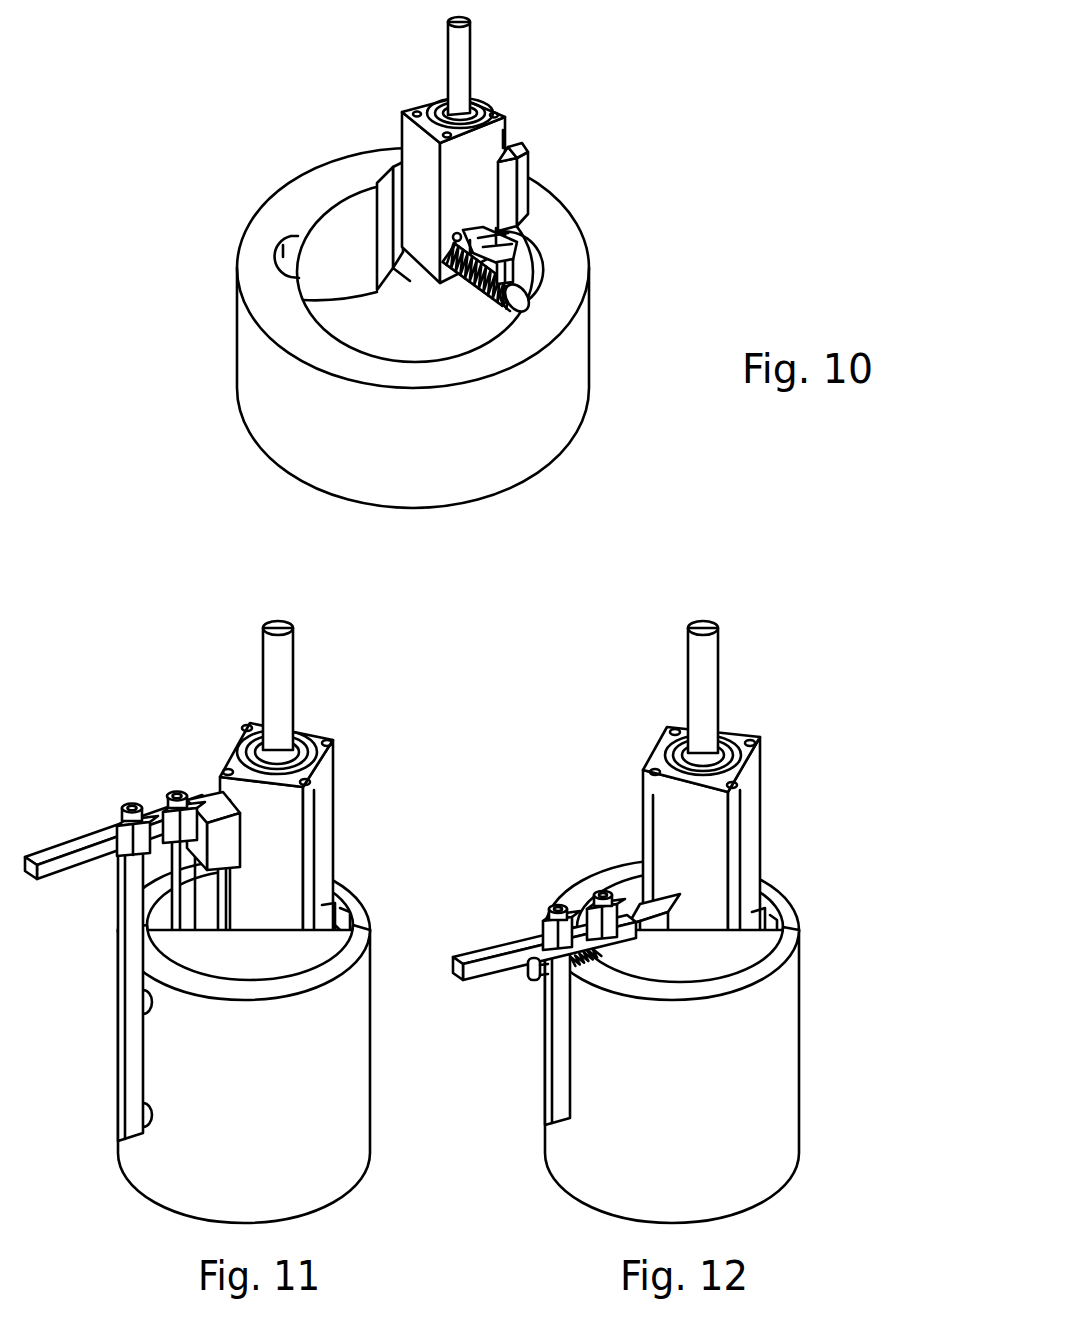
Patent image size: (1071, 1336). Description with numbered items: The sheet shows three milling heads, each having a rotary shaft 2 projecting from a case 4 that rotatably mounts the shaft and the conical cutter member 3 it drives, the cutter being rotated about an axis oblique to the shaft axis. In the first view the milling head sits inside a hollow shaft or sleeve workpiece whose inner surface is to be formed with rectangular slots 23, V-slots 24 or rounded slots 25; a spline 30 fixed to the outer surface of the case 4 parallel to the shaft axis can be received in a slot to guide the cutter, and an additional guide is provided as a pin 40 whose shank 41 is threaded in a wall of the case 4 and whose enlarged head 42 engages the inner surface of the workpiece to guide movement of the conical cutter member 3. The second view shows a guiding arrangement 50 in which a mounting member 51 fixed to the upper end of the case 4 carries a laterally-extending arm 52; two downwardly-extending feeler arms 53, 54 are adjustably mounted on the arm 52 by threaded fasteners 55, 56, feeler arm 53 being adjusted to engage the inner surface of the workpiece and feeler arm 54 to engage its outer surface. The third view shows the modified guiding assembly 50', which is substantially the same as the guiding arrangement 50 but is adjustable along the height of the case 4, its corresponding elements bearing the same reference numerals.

In FIG. 10, the rotary shaft 2 is at (465, 51).
In FIG. 11, the rotary shaft 2 is at (284, 662).
In FIG. 12, the rotary shaft 2 is at (712, 663).
In FIG. 10, the conical cutter member 3 is at (520, 243).
In FIG. 10, the case 4 is at (502, 134).
In FIG. 11, the case 4 is at (338, 816).
In FIG. 12, the case 4 is at (764, 772).
In FIG. 10, the rectangular slots 23 is at (515, 272).
In FIG. 10, the V-slots 24 is at (388, 147).
In FIG. 10, the rounded slots 25 is at (280, 253).
In FIG. 10, the spline 30 is at (522, 183).
In FIG. 10, the pin 40 is at (490, 300).
In FIG. 10, the shank 41 is at (452, 276).
In FIG. 10, the enlarged head 42 is at (521, 302).
In FIG. 11, the guiding arrangement 50 is at (150, 621).
In FIG. 12, the guiding assembly 50' is at (547, 645).
In FIG. 11, the mounting member 51 is at (208, 800).
In FIG. 12, the mounting member 51 is at (666, 940).
In FIG. 11, the laterally-extending arm 52 is at (80, 848).
In FIG. 12, the laterally-extending arm 52 is at (490, 940).
In FIG. 11, the feeler arm 53 is at (163, 873).
In FIG. 11, the feeler arm 54 is at (133, 995).
In FIG. 12, the feeler arm 54 is at (557, 1038).
In FIG. 11, the threaded fastener 55 is at (128, 804).
In FIG. 12, the threaded fastener 55 is at (553, 908).
In FIG. 11, the threaded fastener 56 is at (178, 794).
In FIG. 12, the threaded fastener 56 is at (603, 893).